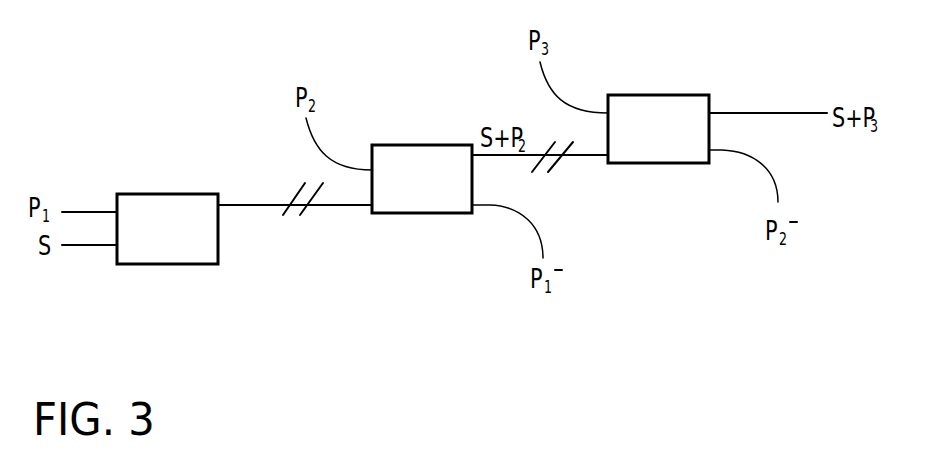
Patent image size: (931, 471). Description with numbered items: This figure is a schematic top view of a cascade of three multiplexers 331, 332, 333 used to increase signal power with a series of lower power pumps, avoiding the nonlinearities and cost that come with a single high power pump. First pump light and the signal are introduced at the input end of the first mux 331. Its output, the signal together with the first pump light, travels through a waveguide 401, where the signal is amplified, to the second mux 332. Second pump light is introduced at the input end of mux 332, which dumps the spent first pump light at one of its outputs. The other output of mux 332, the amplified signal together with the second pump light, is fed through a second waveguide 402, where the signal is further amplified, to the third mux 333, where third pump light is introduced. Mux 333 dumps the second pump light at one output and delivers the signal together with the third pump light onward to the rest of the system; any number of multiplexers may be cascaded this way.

The multiplexer 331 is at (151, 244).
The multiplexer 332 is at (406, 196).
The multiplexer 333 is at (643, 146).
The waveguide 401 is at (347, 205).
The waveguide 402 is at (593, 155).